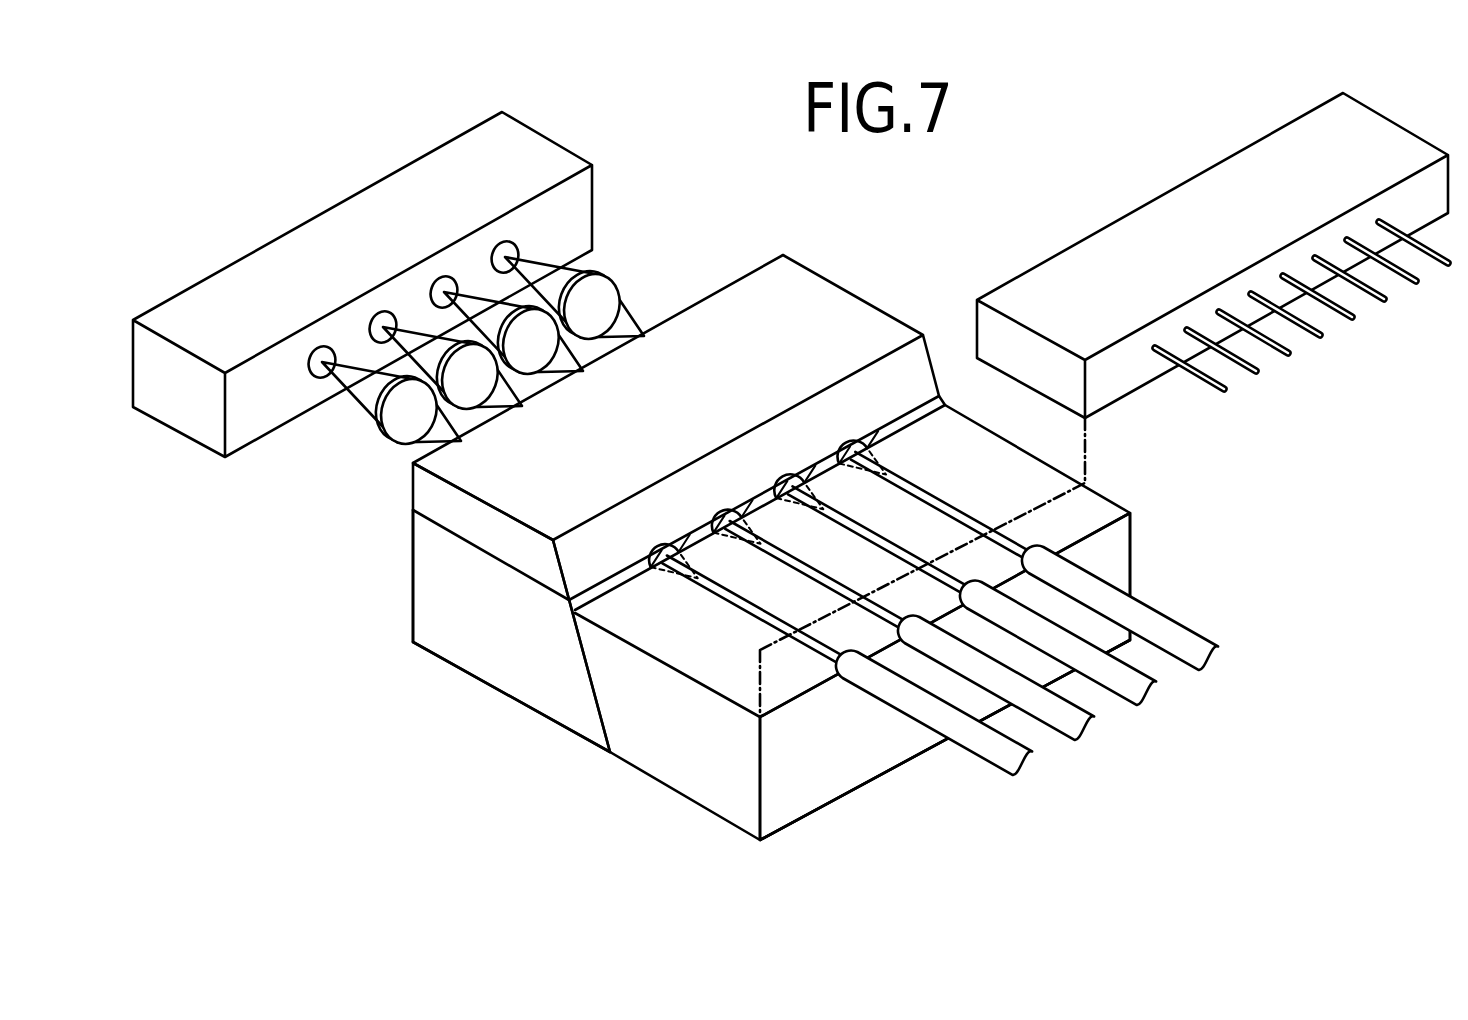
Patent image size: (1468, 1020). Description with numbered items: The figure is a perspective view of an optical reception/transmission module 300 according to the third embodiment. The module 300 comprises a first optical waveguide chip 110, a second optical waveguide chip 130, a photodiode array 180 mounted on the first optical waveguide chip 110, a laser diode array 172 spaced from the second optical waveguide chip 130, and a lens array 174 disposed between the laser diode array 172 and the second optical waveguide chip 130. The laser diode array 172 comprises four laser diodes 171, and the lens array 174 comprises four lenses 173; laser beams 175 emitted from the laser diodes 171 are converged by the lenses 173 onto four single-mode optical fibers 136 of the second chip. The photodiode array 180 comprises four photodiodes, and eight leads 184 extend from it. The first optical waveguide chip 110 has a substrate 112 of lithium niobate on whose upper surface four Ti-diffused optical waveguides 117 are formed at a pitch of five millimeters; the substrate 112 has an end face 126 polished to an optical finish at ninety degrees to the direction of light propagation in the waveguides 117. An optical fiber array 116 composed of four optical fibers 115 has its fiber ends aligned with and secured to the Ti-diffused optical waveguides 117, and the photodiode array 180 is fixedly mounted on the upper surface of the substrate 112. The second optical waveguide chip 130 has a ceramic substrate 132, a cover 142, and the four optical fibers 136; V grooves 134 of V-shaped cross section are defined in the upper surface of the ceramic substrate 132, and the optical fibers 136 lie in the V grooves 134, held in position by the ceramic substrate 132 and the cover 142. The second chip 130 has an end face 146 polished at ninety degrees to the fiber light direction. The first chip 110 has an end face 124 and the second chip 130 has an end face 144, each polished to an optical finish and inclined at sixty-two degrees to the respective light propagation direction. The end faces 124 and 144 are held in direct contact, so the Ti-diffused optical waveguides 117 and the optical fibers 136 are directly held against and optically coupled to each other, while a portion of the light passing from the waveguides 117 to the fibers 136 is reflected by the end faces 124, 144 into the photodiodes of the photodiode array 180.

The optical reception/transmission module 300 is at (1020, 148).
The laser diode array 172 is at (243, 250).
The laser diodes 171 is at (508, 252).
The lenses 173 is at (397, 430).
The lens array 174 is at (626, 269).
The laser beams 175 is at (628, 318).
The second optical waveguide chip 130 is at (462, 636).
The cover 142 is at (848, 303).
The ceramic substrate 132 is at (430, 560).
The end face 146 is at (405, 608).
The end face 144 is at (590, 693).
The end face 124 is at (610, 730).
The first optical waveguide chip 110 is at (710, 776).
The substrate 112 is at (870, 750).
The end face 126 is at (810, 785).
The optical fibers 136 is at (650, 567).
The V grooves 134 is at (675, 580).
The Ti-diffused optical waveguides 117 is at (748, 607).
The optical fibers 115 is at (975, 750).
The optical fiber array 116 is at (1045, 752).
The photodiode array 180 is at (1027, 260).
The leads 184 is at (1253, 365).